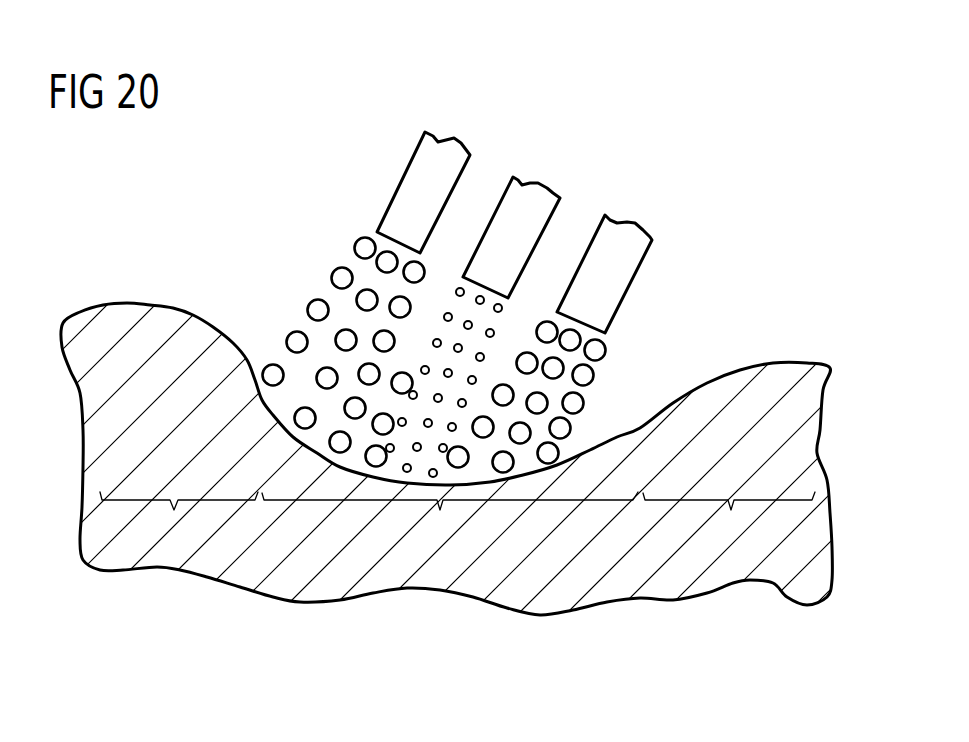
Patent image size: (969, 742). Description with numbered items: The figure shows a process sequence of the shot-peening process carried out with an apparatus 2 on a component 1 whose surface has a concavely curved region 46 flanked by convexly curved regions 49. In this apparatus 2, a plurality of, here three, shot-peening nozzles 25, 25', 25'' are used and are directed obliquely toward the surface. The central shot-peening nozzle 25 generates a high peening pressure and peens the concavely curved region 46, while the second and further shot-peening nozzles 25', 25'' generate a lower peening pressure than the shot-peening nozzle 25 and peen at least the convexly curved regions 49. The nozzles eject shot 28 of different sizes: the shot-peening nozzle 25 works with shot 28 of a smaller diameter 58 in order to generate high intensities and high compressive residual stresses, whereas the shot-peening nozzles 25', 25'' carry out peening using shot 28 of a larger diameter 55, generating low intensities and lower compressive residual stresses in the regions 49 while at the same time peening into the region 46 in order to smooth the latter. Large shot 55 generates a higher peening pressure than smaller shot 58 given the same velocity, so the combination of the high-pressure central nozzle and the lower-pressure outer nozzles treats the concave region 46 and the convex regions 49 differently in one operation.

The component / workpiece 1 is at (104, 613).
The apparatus 2 is at (592, 202).
The shot-peening nozzle 25 is at (518, 184).
The shot-peening nozzle 25' is at (429, 162).
The shot-peening nozzle 25'' is at (634, 263).
The shot 28 is at (485, 317).
The large shot 55 is at (318, 308).
The smaller shot 58 is at (473, 380).
The concavely curved region 46 is at (450, 521).
The convexly curved region 49 is at (457, 520).